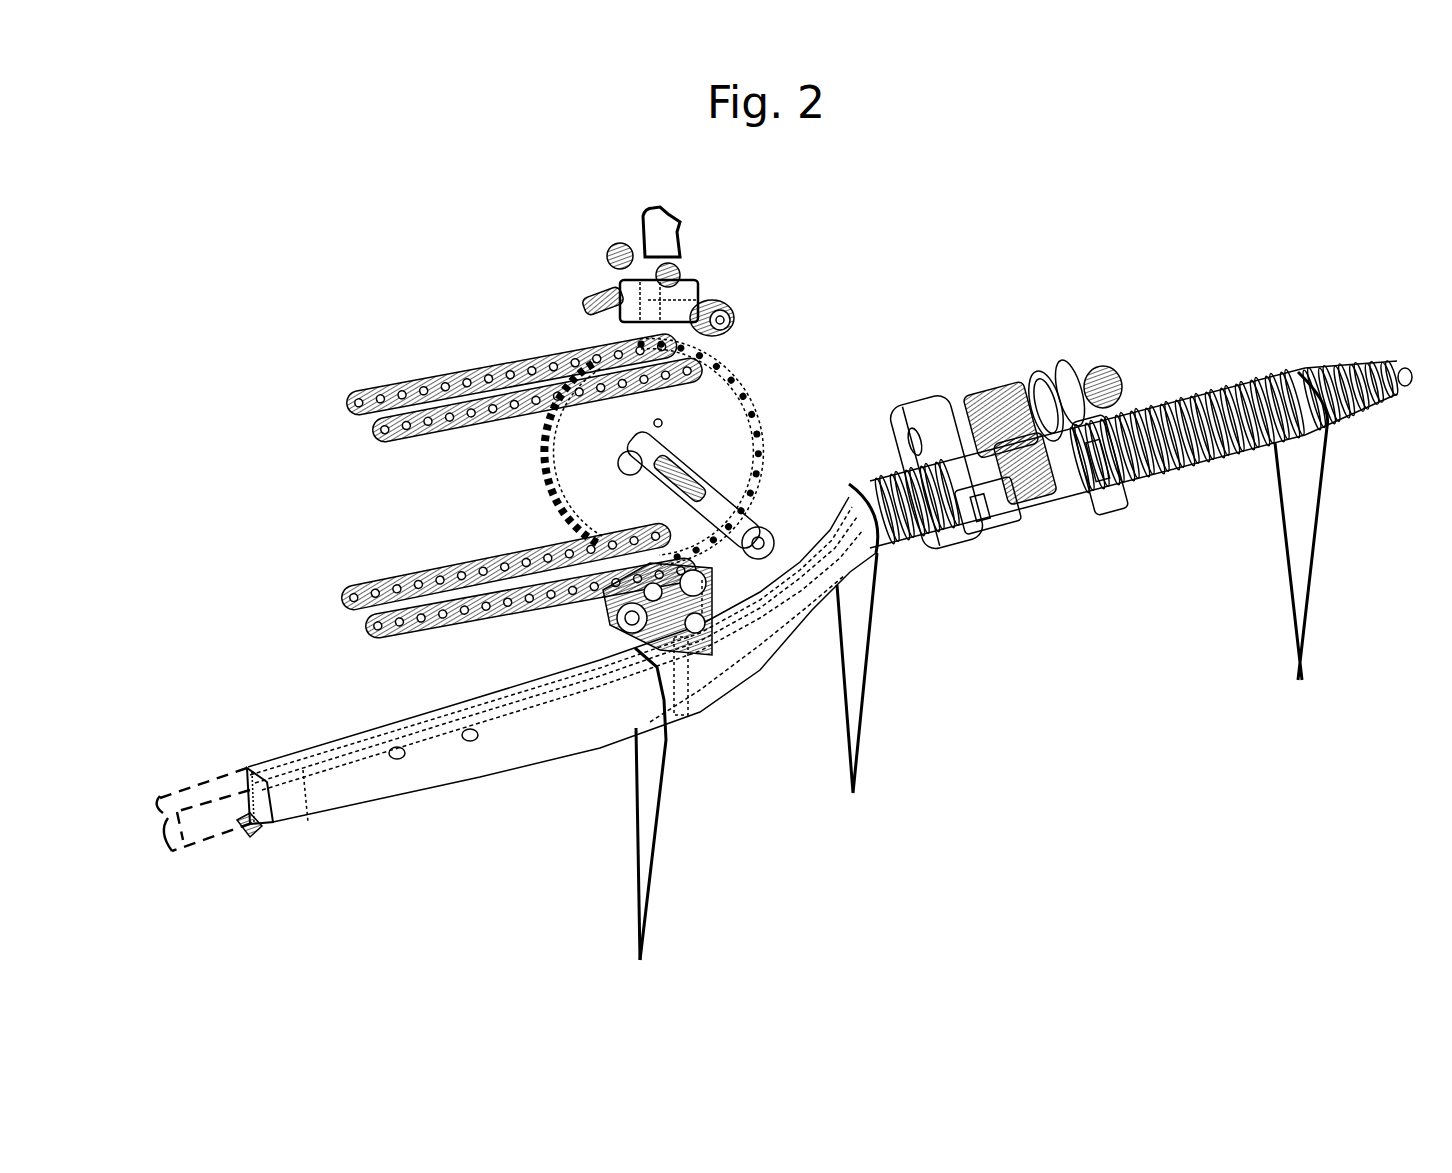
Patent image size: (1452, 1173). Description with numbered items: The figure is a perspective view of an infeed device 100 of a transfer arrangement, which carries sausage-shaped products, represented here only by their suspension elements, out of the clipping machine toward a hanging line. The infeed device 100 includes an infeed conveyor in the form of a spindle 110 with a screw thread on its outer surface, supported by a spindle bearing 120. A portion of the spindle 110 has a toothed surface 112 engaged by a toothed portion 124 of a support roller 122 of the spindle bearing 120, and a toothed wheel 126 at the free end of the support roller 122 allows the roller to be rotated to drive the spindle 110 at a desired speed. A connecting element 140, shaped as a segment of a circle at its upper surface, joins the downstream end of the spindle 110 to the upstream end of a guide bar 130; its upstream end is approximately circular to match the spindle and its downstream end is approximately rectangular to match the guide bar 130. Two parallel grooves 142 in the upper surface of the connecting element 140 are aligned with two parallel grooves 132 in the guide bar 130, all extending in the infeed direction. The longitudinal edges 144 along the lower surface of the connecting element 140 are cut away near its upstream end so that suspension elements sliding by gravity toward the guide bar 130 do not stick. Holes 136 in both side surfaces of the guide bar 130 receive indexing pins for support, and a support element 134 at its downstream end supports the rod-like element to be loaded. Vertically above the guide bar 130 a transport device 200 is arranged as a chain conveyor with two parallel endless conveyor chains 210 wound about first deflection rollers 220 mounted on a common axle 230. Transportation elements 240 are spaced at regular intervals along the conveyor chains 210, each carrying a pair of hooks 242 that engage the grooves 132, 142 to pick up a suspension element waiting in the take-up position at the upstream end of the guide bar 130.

The infeed device 100 is at (1050, 262).
The spindle 110 is at (1220, 370).
The toothed surface 112 is at (1045, 462).
The spindle bearing 120 is at (938, 372).
The support roller 122 is at (1035, 387).
The toothed portion 124 is at (990, 400).
The toothed wheel 126 is at (1100, 373).
The guide bar 130 is at (560, 745).
The grooves 132 is at (345, 738).
The support element 134 is at (253, 830).
The holes 136 is at (468, 742).
The connecting element 140 is at (723, 672).
The grooves 142 is at (753, 608).
The longitudinal edges 144 is at (807, 610).
The transport device 200 is at (427, 333).
The conveyor chains 210 is at (503, 372).
The first deflection rollers 220 is at (585, 467).
The common axle 230 is at (730, 508).
The transportation elements 240 is at (735, 242).
The hooks 242 is at (677, 225).